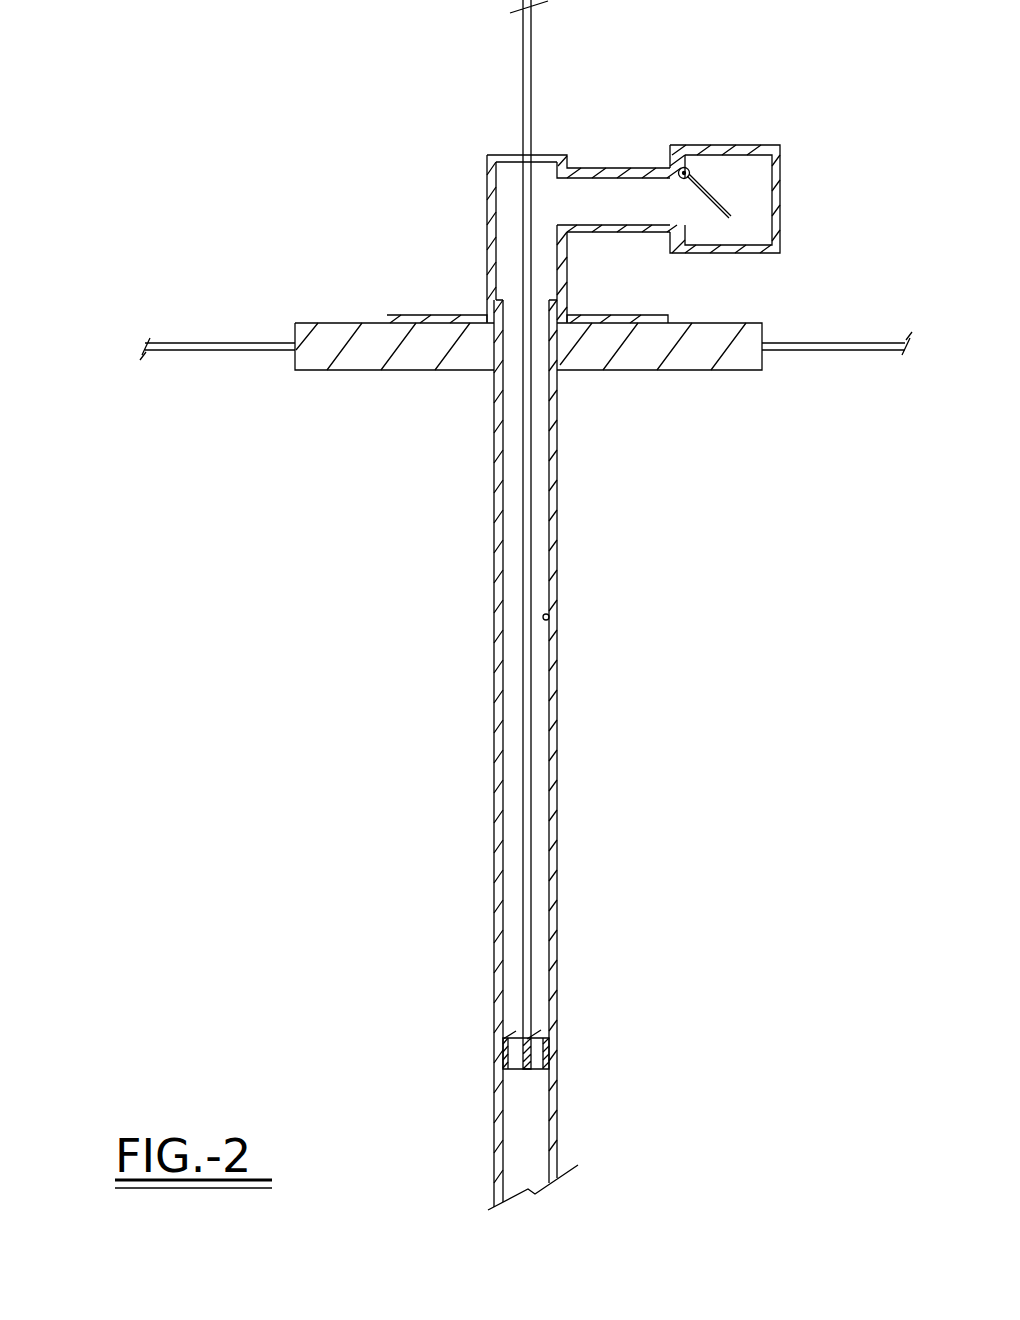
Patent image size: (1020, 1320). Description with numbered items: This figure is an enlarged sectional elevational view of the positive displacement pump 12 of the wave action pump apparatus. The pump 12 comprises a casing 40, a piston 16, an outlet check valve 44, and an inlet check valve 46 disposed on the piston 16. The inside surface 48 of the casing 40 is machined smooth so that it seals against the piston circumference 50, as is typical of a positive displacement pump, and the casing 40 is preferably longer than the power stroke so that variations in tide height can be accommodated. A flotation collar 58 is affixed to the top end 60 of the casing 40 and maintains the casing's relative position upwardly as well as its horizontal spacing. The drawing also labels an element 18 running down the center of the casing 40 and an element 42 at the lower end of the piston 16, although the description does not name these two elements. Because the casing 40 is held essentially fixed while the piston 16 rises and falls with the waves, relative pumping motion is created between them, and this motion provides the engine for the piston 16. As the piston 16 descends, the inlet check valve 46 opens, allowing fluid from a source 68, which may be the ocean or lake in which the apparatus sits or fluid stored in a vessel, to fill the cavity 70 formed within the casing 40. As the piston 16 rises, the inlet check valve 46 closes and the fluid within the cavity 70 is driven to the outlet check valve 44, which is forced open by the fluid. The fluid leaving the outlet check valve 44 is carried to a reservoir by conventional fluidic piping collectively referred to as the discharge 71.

The positive displacement pump 12 is at (248, 140).
The rod 18 is at (524, 90).
The discharge 71 is at (772, 172).
The outlet check valve 44 is at (700, 183).
The top end 60 is at (478, 213).
The flotation collar 58 is at (342, 323).
The cavity 70 is at (540, 522).
The casing 40 is at (493, 598).
The inside surface 48 is at (549, 615).
The source 68 is at (264, 771).
The inlet check valve 46 is at (557, 993).
The piston circumference 50 is at (505, 1050).
The piston 16 is at (545, 1057).
The end cap 42 is at (548, 1062).